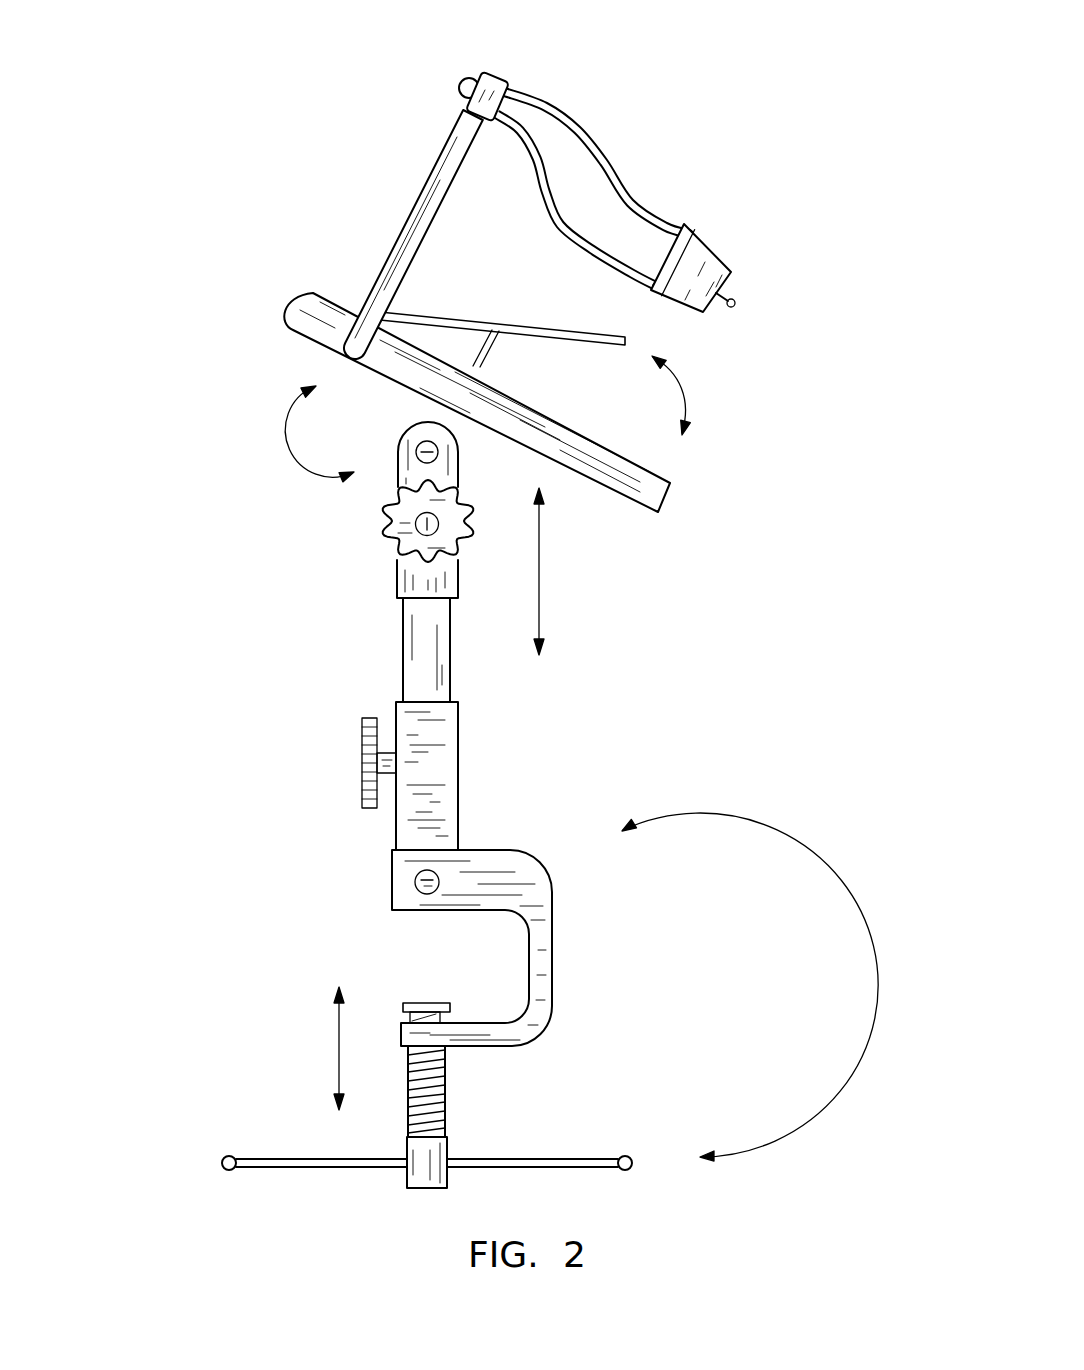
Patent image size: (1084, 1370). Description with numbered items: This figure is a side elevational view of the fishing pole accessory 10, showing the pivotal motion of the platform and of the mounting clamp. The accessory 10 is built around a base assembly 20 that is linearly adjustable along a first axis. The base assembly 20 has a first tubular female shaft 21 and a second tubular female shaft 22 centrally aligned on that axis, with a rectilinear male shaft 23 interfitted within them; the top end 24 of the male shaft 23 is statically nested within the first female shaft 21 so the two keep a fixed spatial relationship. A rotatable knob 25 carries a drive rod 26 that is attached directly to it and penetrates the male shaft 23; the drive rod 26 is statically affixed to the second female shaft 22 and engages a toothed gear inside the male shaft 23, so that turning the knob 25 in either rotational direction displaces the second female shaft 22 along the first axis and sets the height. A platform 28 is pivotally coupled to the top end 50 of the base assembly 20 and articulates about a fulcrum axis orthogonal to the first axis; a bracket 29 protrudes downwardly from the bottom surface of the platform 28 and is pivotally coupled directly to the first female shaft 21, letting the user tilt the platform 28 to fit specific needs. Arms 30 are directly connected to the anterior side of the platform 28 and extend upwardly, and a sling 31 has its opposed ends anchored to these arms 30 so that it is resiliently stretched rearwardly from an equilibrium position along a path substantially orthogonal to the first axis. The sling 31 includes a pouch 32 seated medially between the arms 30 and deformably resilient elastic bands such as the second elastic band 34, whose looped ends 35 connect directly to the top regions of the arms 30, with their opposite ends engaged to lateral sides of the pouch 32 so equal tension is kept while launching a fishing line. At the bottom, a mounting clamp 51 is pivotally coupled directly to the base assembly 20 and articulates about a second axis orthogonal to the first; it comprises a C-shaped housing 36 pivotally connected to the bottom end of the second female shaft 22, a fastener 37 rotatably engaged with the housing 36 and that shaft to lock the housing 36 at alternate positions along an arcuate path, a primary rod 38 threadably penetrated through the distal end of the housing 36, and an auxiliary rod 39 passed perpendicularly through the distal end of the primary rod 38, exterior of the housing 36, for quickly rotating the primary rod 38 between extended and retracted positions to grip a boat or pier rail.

The fishing pole accessory 10 is at (200, 142).
The base assembly 20 is at (428, 674).
The first tubular female shaft 21 is at (344, 539).
The second tubular female shaft 22 is at (510, 776).
The male shaft 23 is at (333, 650).
The top end of the male shaft 24 is at (450, 602).
The rotatable knob 25 is at (362, 755).
The drive rod 26 is at (387, 768).
The platform 28 is at (563, 402).
The bracket 29 is at (427, 412).
The arms 30 is at (428, 202).
The sling 31 is at (674, 164).
The pouch 32 is at (668, 162).
The second elastic band 34 is at (594, 153).
The looped ends 35 is at (462, 83).
The C-shaped housing 36 is at (455, 946).
The fastener 37 is at (415, 880).
The primary rod 38 is at (442, 1087).
The auxiliary rod 39 is at (593, 1157).
The top end of the base assembly 50 is at (398, 447).
The mounting clamp 51 is at (600, 948).